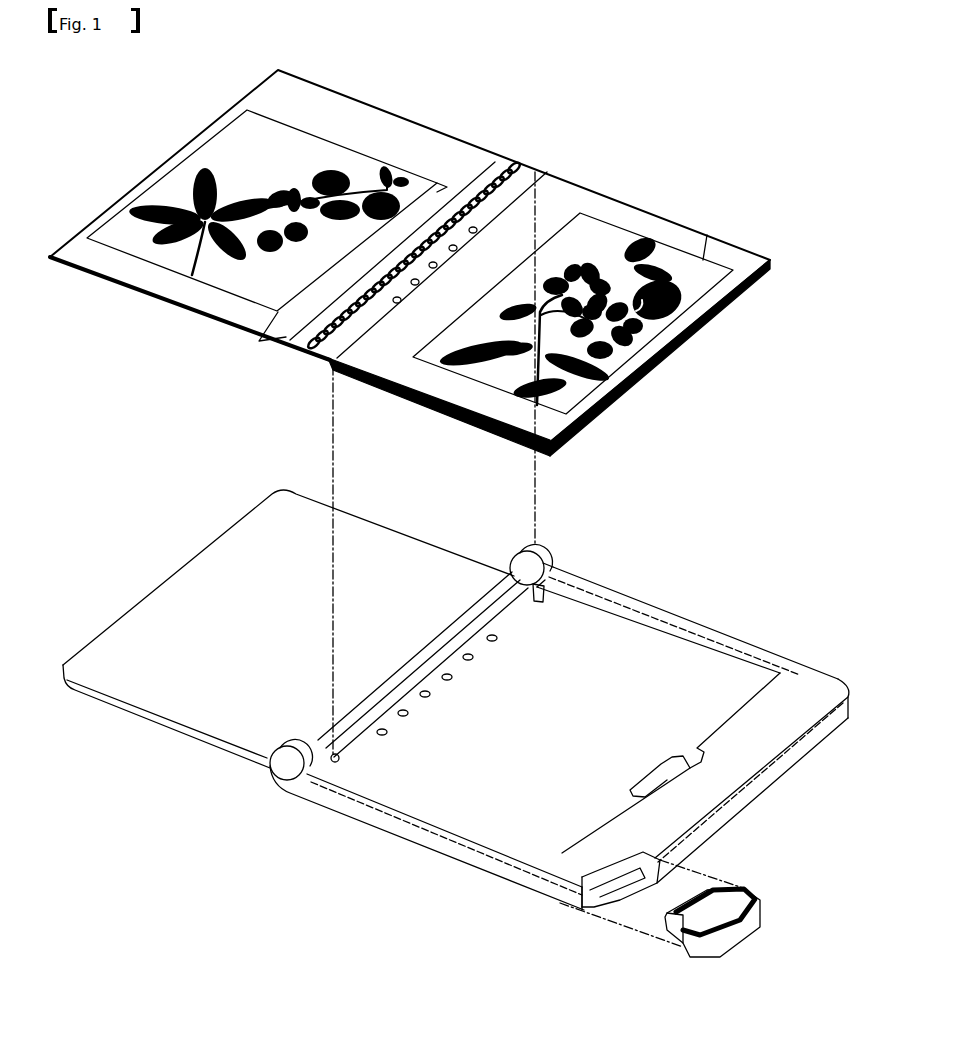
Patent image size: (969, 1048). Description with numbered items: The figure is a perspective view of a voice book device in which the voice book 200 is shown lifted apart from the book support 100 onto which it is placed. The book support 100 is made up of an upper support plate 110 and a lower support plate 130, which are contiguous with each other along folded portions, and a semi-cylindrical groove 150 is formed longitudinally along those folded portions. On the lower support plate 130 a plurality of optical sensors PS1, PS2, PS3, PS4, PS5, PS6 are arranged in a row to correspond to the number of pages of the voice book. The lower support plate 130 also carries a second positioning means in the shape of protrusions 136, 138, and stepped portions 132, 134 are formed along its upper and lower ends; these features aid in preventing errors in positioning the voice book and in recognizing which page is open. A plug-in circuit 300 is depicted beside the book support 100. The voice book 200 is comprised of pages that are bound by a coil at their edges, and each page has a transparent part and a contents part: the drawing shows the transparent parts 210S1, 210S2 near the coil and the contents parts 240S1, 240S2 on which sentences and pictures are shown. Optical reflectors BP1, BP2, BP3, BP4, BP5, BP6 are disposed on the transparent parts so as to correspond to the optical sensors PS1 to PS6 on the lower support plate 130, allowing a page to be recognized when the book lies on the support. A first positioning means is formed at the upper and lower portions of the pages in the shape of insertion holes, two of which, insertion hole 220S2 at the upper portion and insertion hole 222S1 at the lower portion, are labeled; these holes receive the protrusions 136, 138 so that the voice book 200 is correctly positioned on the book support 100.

The book support 100 is at (456, 703).
The upper support plate 110 is at (203, 595).
The lower support plate 130 is at (757, 745).
The stepped portion 132 is at (675, 615).
The stepped portion 134 is at (403, 815).
The protrusion 136 is at (541, 599).
The protrusion 138 is at (344, 760).
The semi-cylindrical groove 150 is at (472, 597).
The optical sensor PS1 is at (497, 639).
The optical sensor PS2 is at (473, 658).
The optical sensor PS3 is at (452, 677).
The optical sensor PS4 is at (430, 695).
The optical sensor PS5 is at (408, 713).
The optical sensor PS6 is at (387, 732).
The voice book 200 is at (440, 258).
The transparent part 210S1 is at (500, 160).
The transparent part 210S2 is at (526, 158).
The insertion hole 220S2 is at (542, 166).
The insertion hole 222S1 is at (253, 343).
The contents part 240S1 is at (350, 112).
The contents part 240S2 is at (708, 234).
The optical reflector BP1 is at (447, 187).
The optical reflector BP2 is at (475, 231).
The optical reflector BP3 is at (455, 249).
The optical reflector BP4 is at (435, 266).
The optical reflector BP5 is at (417, 283).
The optical reflector BP6 is at (399, 301).
The plug-in circuit 300 is at (722, 943).